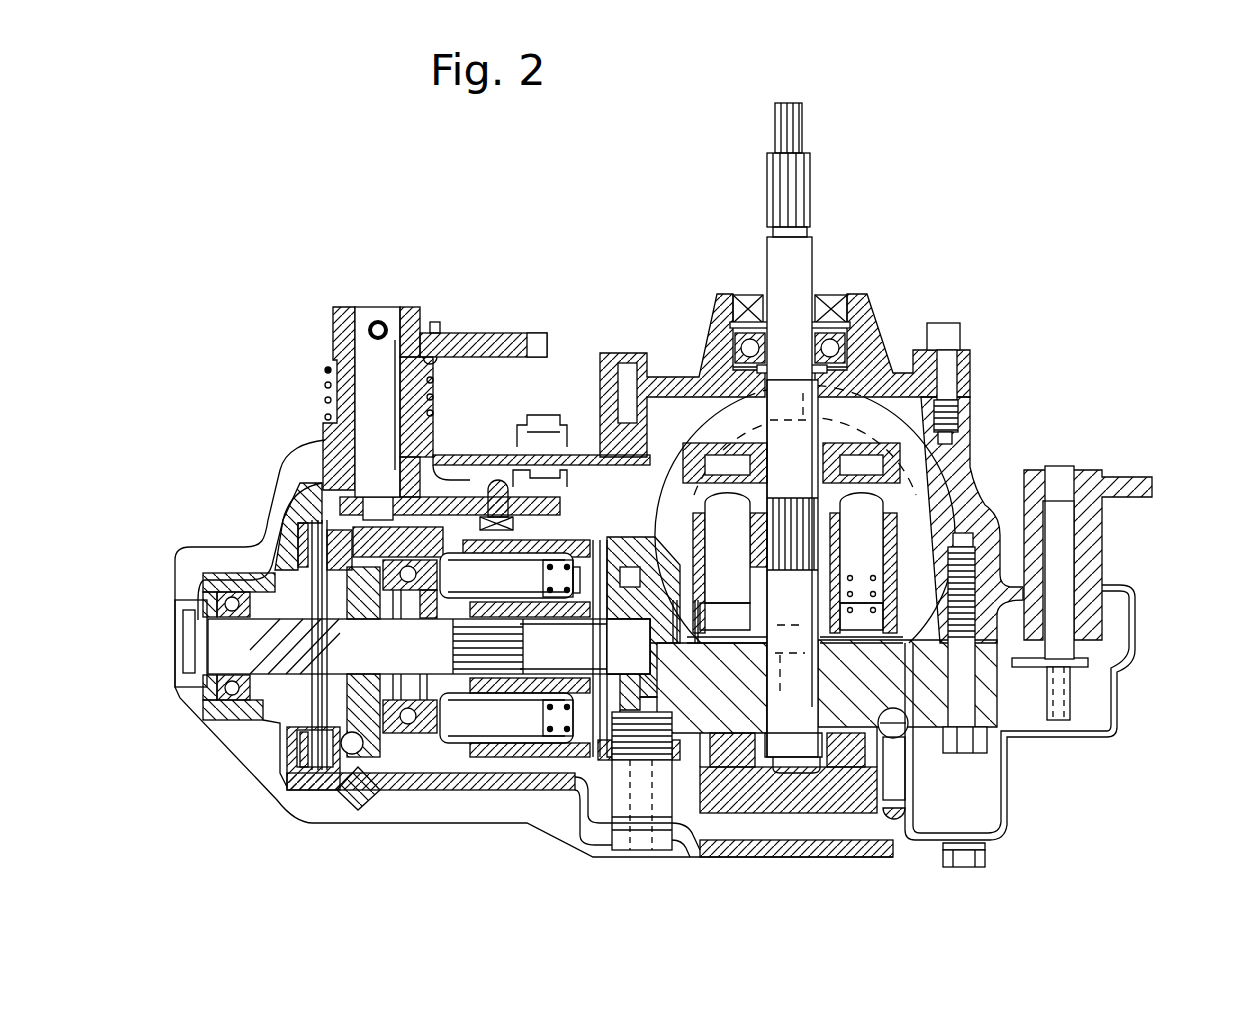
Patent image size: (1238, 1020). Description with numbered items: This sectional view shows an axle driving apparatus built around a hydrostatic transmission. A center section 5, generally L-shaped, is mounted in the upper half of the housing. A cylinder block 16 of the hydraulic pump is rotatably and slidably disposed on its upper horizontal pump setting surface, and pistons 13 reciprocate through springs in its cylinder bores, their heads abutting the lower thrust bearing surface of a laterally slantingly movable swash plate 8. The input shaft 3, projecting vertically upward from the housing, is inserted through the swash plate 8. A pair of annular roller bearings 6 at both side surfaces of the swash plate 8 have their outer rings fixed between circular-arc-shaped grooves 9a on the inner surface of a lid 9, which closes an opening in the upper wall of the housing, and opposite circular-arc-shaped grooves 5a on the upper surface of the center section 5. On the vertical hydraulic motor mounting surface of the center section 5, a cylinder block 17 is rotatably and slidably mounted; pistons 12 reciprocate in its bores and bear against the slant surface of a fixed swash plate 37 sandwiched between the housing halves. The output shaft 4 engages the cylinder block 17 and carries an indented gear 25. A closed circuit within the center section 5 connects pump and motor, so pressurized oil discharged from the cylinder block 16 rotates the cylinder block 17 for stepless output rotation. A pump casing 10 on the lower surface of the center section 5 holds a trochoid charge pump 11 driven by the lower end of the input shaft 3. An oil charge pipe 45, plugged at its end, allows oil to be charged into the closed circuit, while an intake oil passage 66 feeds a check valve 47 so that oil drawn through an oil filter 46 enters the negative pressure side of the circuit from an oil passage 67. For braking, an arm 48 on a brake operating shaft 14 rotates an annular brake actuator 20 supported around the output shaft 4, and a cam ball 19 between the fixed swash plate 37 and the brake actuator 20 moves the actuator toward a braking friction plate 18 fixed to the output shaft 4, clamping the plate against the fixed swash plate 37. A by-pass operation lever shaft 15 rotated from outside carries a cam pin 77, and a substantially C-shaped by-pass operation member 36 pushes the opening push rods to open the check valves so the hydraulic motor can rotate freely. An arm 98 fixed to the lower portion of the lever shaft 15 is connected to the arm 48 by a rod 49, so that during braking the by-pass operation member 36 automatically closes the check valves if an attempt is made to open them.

The input shaft 3 is at (804, 188).
The output shaft 4 is at (429, 646).
The center section 5 is at (599, 621).
The circular-arc-shaped grooves 5a is at (727, 753).
The annular roller bearings 6 is at (888, 367).
The swash plate 8 is at (655, 487).
The lid 9 is at (855, 312).
The circular-arc-shaped grooves 9a is at (702, 348).
The pump casing 10 is at (853, 807).
The trochoid charge pump 11 is at (837, 767).
The pistons 12 is at (520, 648).
The pistons 13 is at (720, 543).
The brake operating shaft 14 is at (398, 282).
The by-pass operation lever shaft 15 is at (1057, 462).
The cylinder block 16 is at (880, 520).
The cylinder block 17 is at (505, 773).
The braking friction plate 18 is at (267, 733).
The cam ball 19 is at (387, 790).
The brake actuator 20 is at (340, 777).
The indented gear 25 is at (257, 727).
The by-pass operation member 36 is at (1040, 740).
The fixed swash plate 37 is at (352, 530).
The oil charge pipe 45 is at (643, 850).
The oil filter 46 is at (927, 840).
The check valve 47 is at (974, 805).
The arm 48 is at (453, 495).
The rod 49 is at (497, 470).
The intake oil passage 66 is at (990, 835).
The oil passage 67 is at (940, 735).
The cam pin 77 is at (1170, 733).
The arm 98 is at (1117, 664).